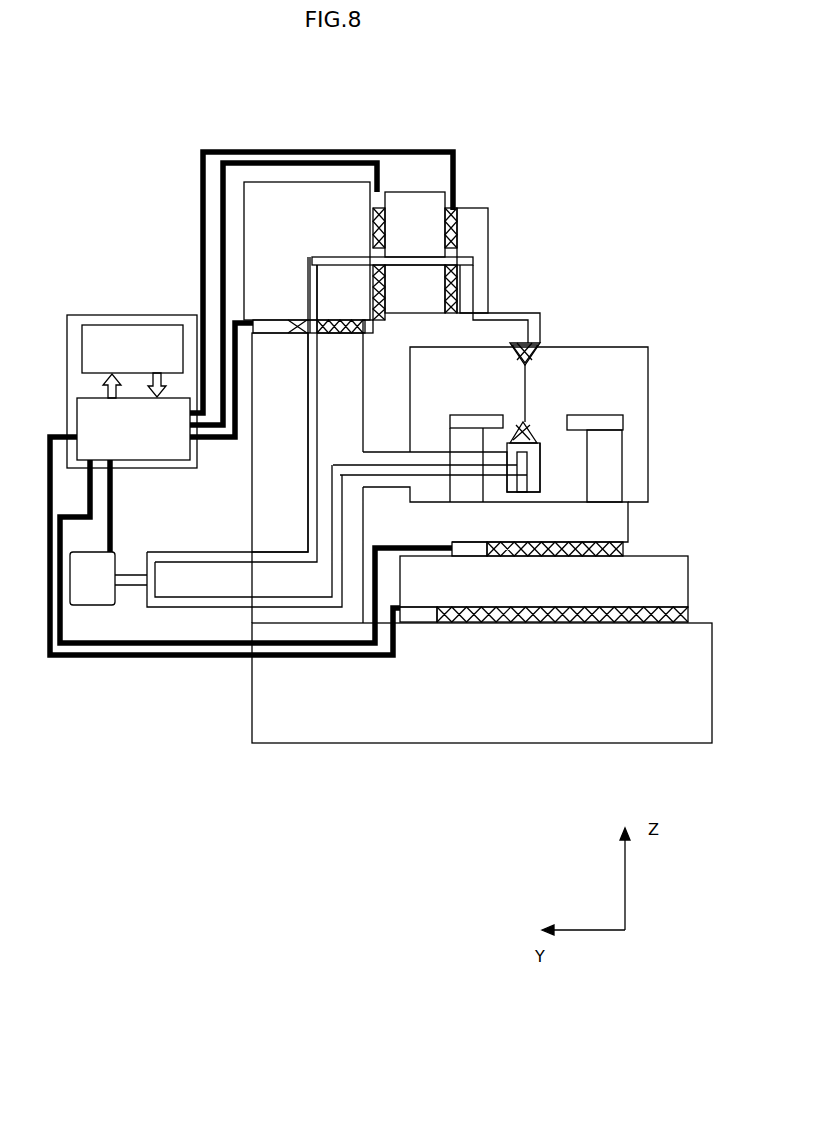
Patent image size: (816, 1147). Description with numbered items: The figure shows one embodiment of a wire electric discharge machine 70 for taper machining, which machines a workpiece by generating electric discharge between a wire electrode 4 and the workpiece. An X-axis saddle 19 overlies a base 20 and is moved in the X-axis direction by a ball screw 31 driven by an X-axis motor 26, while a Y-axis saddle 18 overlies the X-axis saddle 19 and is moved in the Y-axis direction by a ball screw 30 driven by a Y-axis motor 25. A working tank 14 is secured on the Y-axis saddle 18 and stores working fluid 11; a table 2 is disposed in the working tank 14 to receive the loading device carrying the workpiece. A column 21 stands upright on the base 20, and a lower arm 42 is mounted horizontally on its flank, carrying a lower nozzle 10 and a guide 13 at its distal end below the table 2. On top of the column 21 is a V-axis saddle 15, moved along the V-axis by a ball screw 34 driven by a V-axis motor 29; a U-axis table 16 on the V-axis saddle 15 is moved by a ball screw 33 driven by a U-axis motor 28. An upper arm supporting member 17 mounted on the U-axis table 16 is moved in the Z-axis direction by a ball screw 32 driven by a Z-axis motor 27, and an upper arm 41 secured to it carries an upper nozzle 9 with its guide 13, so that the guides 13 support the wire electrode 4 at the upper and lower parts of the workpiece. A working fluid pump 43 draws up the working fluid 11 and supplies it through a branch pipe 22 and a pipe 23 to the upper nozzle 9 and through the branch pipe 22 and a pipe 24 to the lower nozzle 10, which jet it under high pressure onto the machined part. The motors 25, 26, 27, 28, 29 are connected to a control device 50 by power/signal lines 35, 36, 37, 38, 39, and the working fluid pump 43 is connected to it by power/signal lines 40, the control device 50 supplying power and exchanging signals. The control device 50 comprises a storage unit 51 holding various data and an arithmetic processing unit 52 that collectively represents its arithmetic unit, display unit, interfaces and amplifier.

The wire electric discharge machine 70 is at (122, 162).
The table 2 is at (625, 418).
The wire electrode 4 is at (530, 392).
The upper nozzle 9 is at (540, 358).
The lower nozzle 10 is at (537, 444).
The working fluid 11 is at (640, 462).
The guide 13 is at (512, 350).
The working tank 14 is at (620, 347).
The V-axis saddle 15 is at (340, 182).
The U-axis table 16 is at (425, 207).
The upper arm supporting member 17 is at (490, 222).
The Y-axis saddle 18 is at (622, 523).
The X-axis saddle 19 is at (690, 592).
The base 20 is at (478, 723).
The column 21 is at (250, 513).
The branch pipe 22 is at (130, 587).
The pipe 23 is at (312, 257).
The pipe 24 is at (433, 473).
The Y-axis motor 25 is at (457, 546).
The X-axis motor 26 is at (405, 612).
The Z-axis motor 27 is at (458, 210).
The U-axis motor 28 is at (378, 204).
The V-axis motor 29 is at (295, 320).
The ball screw 30 is at (625, 549).
The ball screw 31 is at (690, 614).
The ball screw 32 is at (475, 263).
The ball screw 33 is at (374, 314).
The ball screw 34 is at (365, 331).
The power/signal line 35 is at (183, 643).
The power/signal line 36 is at (220, 657).
The power/signal line 37 is at (300, 163).
The power/signal line 38 is at (262, 150).
The power/signal line 39 is at (232, 322).
The power/signal lines 40 is at (115, 490).
The upper arm 41 is at (476, 313).
The lower arm 42 is at (395, 452).
The working fluid pump 43 is at (86, 606).
The control device 50 is at (100, 315).
The storage unit 51 is at (80, 350).
The arithmetic processing unit 52 is at (77, 418).